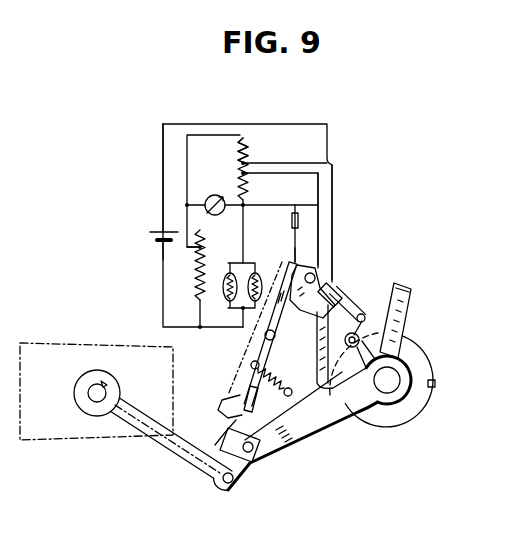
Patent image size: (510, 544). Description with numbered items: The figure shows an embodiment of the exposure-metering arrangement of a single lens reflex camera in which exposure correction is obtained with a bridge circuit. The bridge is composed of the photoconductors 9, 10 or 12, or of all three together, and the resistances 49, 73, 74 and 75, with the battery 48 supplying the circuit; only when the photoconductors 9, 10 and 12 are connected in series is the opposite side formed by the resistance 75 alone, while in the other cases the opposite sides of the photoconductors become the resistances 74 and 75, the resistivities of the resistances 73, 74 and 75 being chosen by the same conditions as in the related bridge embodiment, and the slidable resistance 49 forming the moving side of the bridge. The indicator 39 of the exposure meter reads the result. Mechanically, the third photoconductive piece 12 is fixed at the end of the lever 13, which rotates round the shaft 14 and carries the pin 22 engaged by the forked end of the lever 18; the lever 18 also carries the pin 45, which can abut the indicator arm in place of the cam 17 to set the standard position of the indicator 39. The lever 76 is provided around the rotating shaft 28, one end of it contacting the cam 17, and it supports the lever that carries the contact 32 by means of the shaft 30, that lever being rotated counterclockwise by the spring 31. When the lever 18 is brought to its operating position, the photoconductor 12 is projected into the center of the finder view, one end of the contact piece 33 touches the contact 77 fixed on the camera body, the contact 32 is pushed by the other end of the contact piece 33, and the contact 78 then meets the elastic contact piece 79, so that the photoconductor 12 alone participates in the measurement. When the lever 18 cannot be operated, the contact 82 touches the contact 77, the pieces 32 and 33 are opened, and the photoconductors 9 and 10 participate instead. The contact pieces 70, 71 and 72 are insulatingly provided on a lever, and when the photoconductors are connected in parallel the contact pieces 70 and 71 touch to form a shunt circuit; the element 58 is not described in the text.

The photoconductor 9 is at (292, 274).
The photoconductor 10 is at (203, 272).
The third photoconductive piece 12 is at (100, 402).
The lever 13 is at (140, 445).
The shaft 14 is at (227, 488).
The cam 17 is at (370, 424).
The lever 18 is at (302, 438).
The pin 22 is at (254, 456).
The shaft 28 is at (315, 275).
The shaft 30 is at (266, 333).
The spring 31 is at (280, 373).
The contact 32 is at (259, 392).
The contact 33 is at (282, 422).
The indicator 39 is at (211, 197).
The pin 45 is at (367, 350).
The electric source battery 48 is at (157, 232).
The slidable resistance 49 is at (198, 276).
The stop 58 is at (436, 388).
The contact piece 70 is at (343, 300).
The contact piece 71 is at (360, 330).
The contact piece 72 is at (318, 310).
The resistance 73 is at (248, 181).
The resistance 74 is at (241, 160).
The resistance 75 is at (242, 139).
The lever 76 is at (322, 342).
The contact 77 is at (237, 432).
The contact 78 is at (296, 258).
The elastic contact piece 79 is at (292, 228).
The contact 82 is at (232, 415).